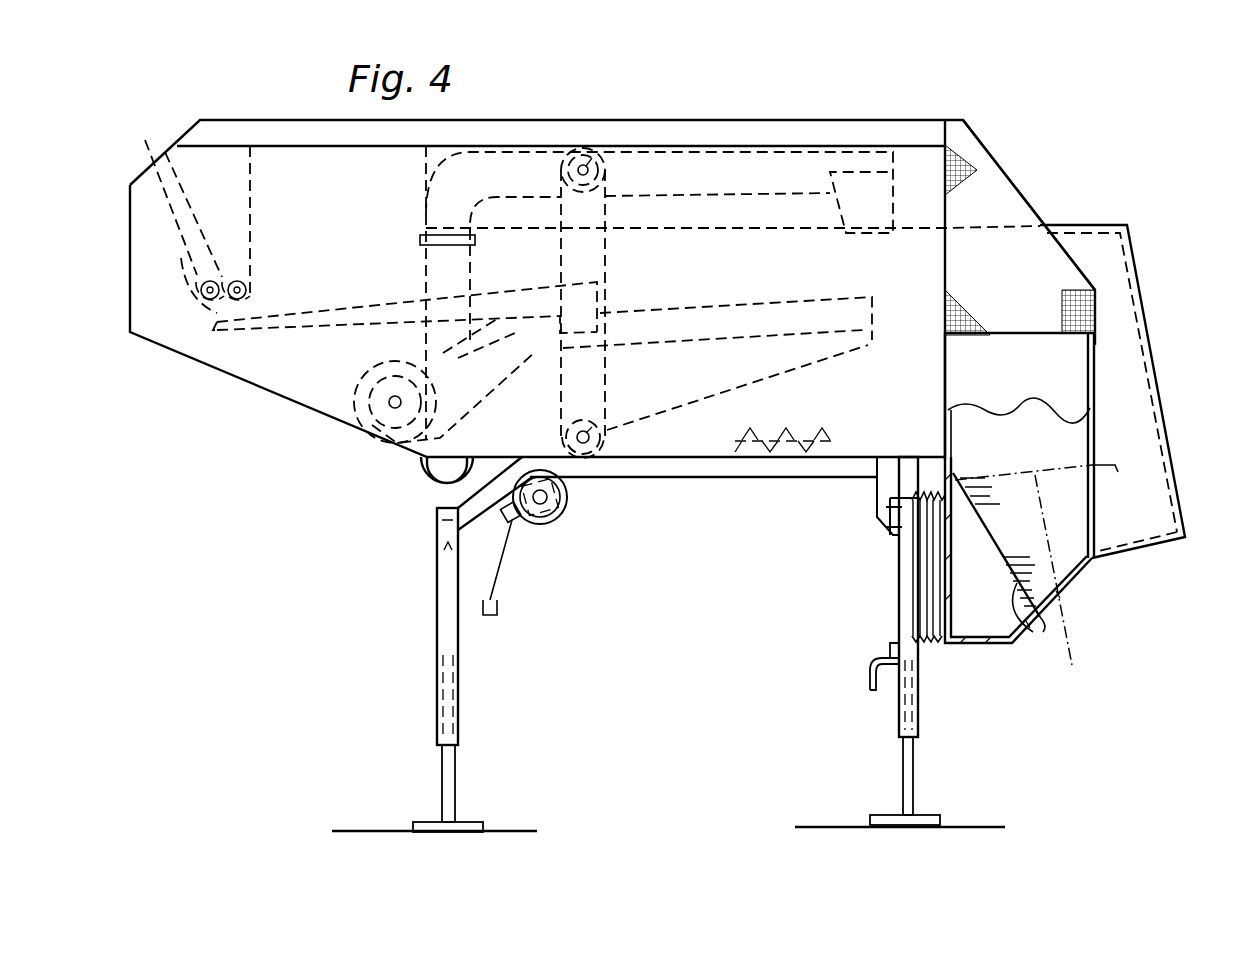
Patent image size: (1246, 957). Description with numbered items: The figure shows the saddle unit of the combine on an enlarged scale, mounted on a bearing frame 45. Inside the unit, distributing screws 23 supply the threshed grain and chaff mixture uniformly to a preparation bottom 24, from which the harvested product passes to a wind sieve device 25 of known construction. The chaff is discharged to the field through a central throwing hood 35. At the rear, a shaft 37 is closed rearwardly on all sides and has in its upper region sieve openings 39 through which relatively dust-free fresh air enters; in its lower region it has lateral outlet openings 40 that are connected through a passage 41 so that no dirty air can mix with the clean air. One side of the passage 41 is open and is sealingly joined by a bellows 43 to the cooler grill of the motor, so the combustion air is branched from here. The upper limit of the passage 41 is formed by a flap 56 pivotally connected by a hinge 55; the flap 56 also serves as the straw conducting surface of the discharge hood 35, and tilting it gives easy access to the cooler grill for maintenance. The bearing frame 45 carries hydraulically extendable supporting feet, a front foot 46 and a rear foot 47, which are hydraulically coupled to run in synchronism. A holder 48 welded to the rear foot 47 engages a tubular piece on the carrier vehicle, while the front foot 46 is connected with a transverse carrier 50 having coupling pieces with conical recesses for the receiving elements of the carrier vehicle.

The distributing screws 23 is at (233, 283).
The preparation bottom 24 is at (320, 322).
The wind sieve device 25 is at (676, 298).
The central throwing hood 35 is at (1147, 425).
The shaft 37 is at (1070, 375).
The sieve openings 39 is at (1030, 222).
The lateral outlet openings 40 is at (982, 622).
The passage 41 is at (1013, 643).
The bellows 43 is at (930, 642).
The bearing frame 45 is at (718, 465).
The front supporting foot 46 is at (465, 822).
The rear supporting foot 47 is at (885, 818).
The holder 48 is at (875, 663).
The transverse carrier 50 is at (448, 512).
The hinge 55 is at (955, 515).
The flap 56 is at (1006, 620).